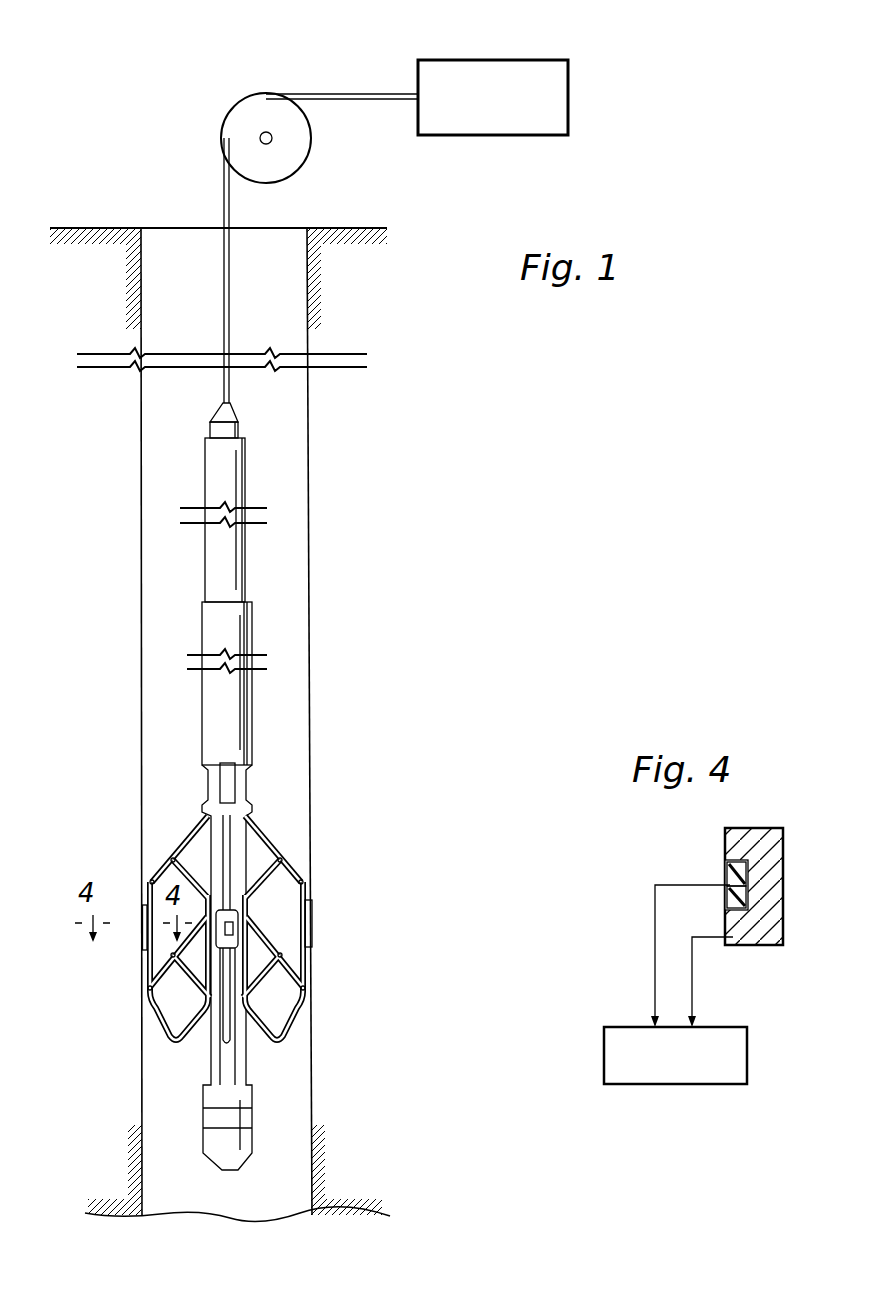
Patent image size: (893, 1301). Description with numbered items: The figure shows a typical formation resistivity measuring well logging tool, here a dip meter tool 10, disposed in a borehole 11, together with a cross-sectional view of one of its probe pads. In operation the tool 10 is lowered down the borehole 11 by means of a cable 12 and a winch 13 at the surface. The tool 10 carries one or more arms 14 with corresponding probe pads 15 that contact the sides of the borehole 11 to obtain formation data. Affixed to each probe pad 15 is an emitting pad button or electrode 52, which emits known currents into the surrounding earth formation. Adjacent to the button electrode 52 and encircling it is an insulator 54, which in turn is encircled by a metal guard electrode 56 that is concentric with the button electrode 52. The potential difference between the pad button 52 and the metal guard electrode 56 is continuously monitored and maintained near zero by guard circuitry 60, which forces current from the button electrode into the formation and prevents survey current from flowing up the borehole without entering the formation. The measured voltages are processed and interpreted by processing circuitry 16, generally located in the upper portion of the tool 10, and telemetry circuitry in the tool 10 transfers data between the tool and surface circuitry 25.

In FIG. 1, the dip meter tool 10 is at (234, 786).
In FIG. 1, the borehole 11 is at (310, 512).
In FIG. 1, the cable 12 is at (222, 200).
In FIG. 1, the winch 13 is at (292, 160).
In FIG. 1, the arms 14 is at (188, 833).
In FIG. 1, the probe pads 15 is at (313, 926).
In FIG. 4, the probe pads 15 is at (777, 818).
In FIG. 1, the processing circuitry 16 is at (235, 703).
In FIG. 1, the surface circuitry 25 is at (490, 58).
In FIG. 1, the emitting pad button electrode 52 is at (236, 926).
In FIG. 4, the emitting pad button electrode 52 is at (727, 877).
In FIG. 4, the insulator 54 is at (728, 900).
In FIG. 1, the metal guard electrode 56 is at (240, 910).
In FIG. 4, the metal guard electrode 56 is at (772, 857).
In FIG. 4, the guard circuitry 60 is at (688, 1070).